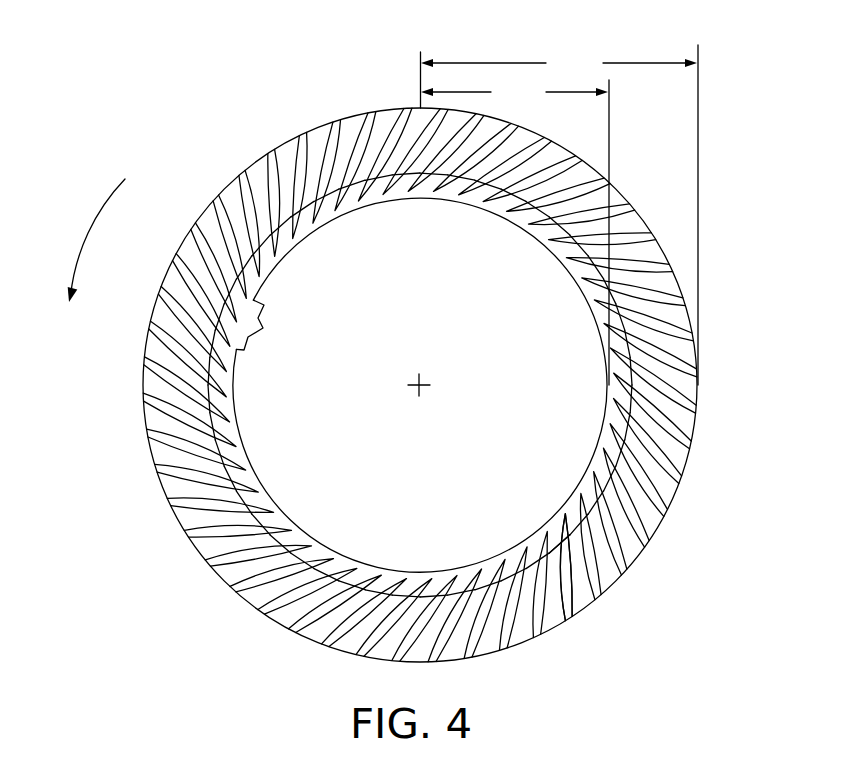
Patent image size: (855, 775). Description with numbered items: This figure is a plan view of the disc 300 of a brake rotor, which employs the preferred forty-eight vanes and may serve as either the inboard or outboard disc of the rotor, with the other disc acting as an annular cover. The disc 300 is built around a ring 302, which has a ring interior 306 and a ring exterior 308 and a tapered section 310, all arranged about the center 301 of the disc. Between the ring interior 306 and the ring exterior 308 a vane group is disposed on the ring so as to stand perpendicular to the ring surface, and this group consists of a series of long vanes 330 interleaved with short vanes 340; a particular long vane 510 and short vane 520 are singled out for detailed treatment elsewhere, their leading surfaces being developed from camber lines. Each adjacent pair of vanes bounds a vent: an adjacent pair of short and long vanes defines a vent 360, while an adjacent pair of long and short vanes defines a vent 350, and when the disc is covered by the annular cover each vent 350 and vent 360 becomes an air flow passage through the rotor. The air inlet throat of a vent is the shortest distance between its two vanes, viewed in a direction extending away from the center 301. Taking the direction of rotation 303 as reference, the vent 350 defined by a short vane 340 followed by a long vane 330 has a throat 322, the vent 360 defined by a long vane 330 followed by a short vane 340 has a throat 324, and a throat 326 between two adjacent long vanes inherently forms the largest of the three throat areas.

The disc 300 is at (422, 380).
The center 301 is at (423, 390).
The ring 302 is at (147, 422).
The direction of rotation 303 is at (84, 255).
The ring interior 306 is at (515, 232).
The ring exterior 308 is at (560, 215).
The tapered section 310 is at (298, 232).
The throat 322 is at (493, 210).
The throat 324 is at (243, 497).
The throat 326 is at (262, 328).
The long vane 330 is at (535, 633).
The short vane 340 is at (572, 617).
The vent 350 is at (582, 172).
The vent 360 is at (165, 452).
The long vane 510 is at (667, 513).
The short vane 520 is at (690, 433).